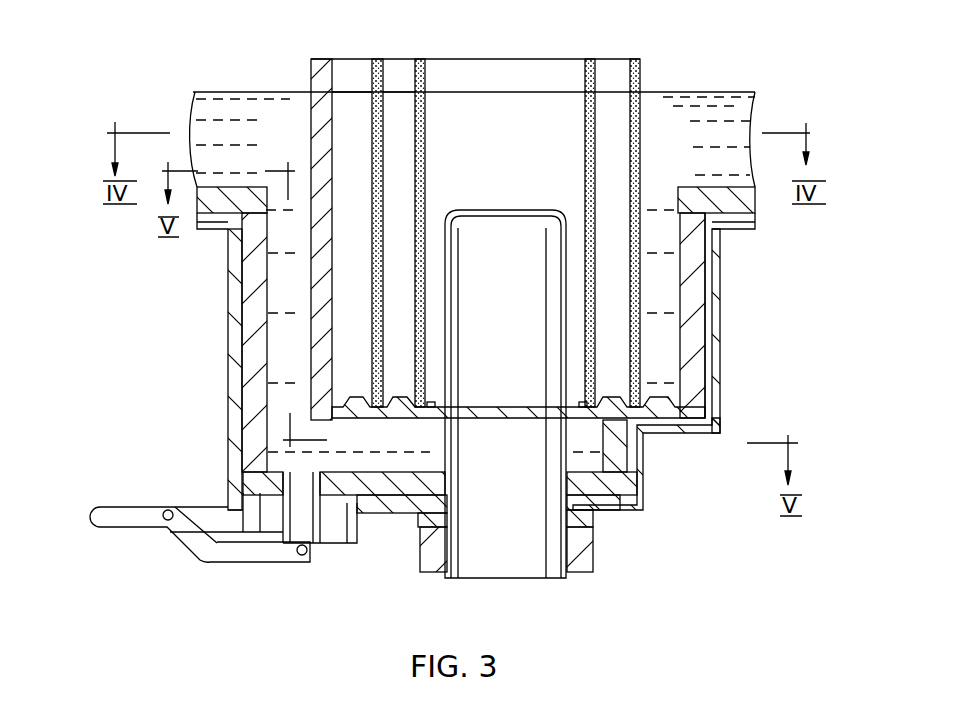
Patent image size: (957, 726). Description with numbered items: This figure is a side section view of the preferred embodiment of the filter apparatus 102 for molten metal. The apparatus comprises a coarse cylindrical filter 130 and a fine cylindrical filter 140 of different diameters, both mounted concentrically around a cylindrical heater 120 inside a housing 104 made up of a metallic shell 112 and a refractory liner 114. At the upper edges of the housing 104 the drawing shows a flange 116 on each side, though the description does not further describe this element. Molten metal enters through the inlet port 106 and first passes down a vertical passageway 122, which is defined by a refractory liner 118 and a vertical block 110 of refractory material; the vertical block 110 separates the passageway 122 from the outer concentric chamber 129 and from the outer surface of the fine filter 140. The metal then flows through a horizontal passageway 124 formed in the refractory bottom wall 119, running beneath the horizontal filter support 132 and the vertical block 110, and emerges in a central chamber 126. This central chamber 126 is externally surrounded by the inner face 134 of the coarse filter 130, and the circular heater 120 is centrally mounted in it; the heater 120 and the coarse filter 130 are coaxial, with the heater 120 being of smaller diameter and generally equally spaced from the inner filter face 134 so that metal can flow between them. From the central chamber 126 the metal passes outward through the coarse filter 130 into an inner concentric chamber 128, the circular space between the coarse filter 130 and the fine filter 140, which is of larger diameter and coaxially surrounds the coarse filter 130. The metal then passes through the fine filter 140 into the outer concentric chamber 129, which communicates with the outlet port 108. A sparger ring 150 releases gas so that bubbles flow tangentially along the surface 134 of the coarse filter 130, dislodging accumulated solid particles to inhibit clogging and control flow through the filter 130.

The filter apparatus 102 is at (754, 60).
The housing 104 is at (222, 330).
The molten metal inlet port 106 is at (215, 130).
The outlet port 108 is at (733, 135).
The vertical block 110 is at (310, 80).
The metallic shell 112 is at (720, 402).
The refractory liner 114 is at (708, 308).
The flange 116 is at (227, 202).
The refractory liner 118 is at (250, 443).
The refractory bottom wall 119 is at (600, 487).
The cylindrical heater 120 is at (473, 578).
The vertical passageway 122 is at (275, 352).
The horizontal passageway 124 is at (432, 440).
The central chamber 126 is at (525, 190).
The inner concentric chamber 128 is at (407, 332).
The outer concentric chamber 129 is at (350, 103).
The coarse cylindrical filter 130 is at (425, 65).
The horizontal filter support 132 is at (417, 413).
The inner face 134 is at (425, 140).
The fine cylindrical filter 140 is at (638, 72).
The sparger ring 150 is at (430, 405).